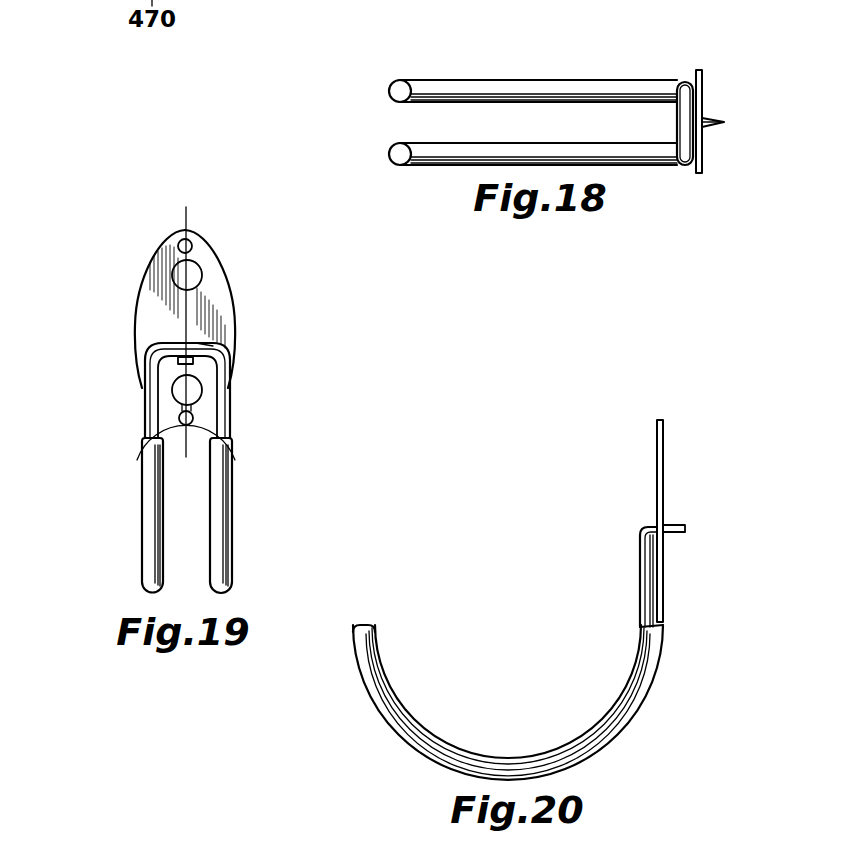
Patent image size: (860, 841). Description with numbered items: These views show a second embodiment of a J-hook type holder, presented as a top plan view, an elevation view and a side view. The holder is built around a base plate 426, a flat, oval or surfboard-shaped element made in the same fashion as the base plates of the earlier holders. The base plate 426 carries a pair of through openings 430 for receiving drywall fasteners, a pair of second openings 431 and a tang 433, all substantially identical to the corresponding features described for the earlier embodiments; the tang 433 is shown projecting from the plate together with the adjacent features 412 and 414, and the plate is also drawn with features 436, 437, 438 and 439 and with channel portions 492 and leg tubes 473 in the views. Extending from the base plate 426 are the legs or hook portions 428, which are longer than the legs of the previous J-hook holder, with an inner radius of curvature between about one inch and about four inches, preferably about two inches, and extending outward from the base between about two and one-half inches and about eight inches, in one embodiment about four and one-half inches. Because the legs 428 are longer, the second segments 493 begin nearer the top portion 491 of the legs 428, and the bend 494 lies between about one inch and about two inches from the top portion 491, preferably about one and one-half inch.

In FIG. 18, the base of pin 412 is at (704, 128).
In FIG. 20, the base of pin 412 is at (665, 535).
In FIG. 18, the pin tip 414 is at (722, 124).
In FIG. 20, the pin tip 414 is at (686, 531).
In FIG. 18, the base plate 426 is at (706, 90).
In FIG. 19, the base plate 426 is at (222, 288).
In FIG. 20, the base plate 426 is at (657, 458).
In FIG. 19, the legs or hook portions 428 is at (145, 439).
In FIG. 19, the through openings 430 is at (173, 278).
In FIG. 19, the second openings 431 is at (178, 244).
In FIG. 18, the tang 433 is at (722, 121).
In FIG. 20, the tang 433 is at (682, 525).
In FIG. 19, the bridge top 436 is at (183, 338).
In FIG. 19, the tab 437 is at (177, 364).
In FIG. 19, the centerline / plate edge 438 is at (187, 230).
In FIG. 20, the centerline / plate edge 438 is at (662, 420).
In FIG. 19, the transition 439 is at (165, 446).
In FIG. 20, the transition 439 is at (664, 627).
In FIG. 18, the tube leg 473 is at (392, 92).
In FIG. 19, the tube leg 473 is at (147, 528).
In FIG. 20, the tube leg 473 is at (360, 656).
In FIG. 19, the top portion 491 is at (200, 344).
In FIG. 19, the bracket channel 492 is at (146, 400).
In FIG. 20, the bracket channel 492 is at (645, 605).
In FIG. 18, the second segments 493 is at (542, 88).
In FIG. 20, the second segments 493 is at (508, 760).
In FIG. 20, the bend 494 is at (660, 665).